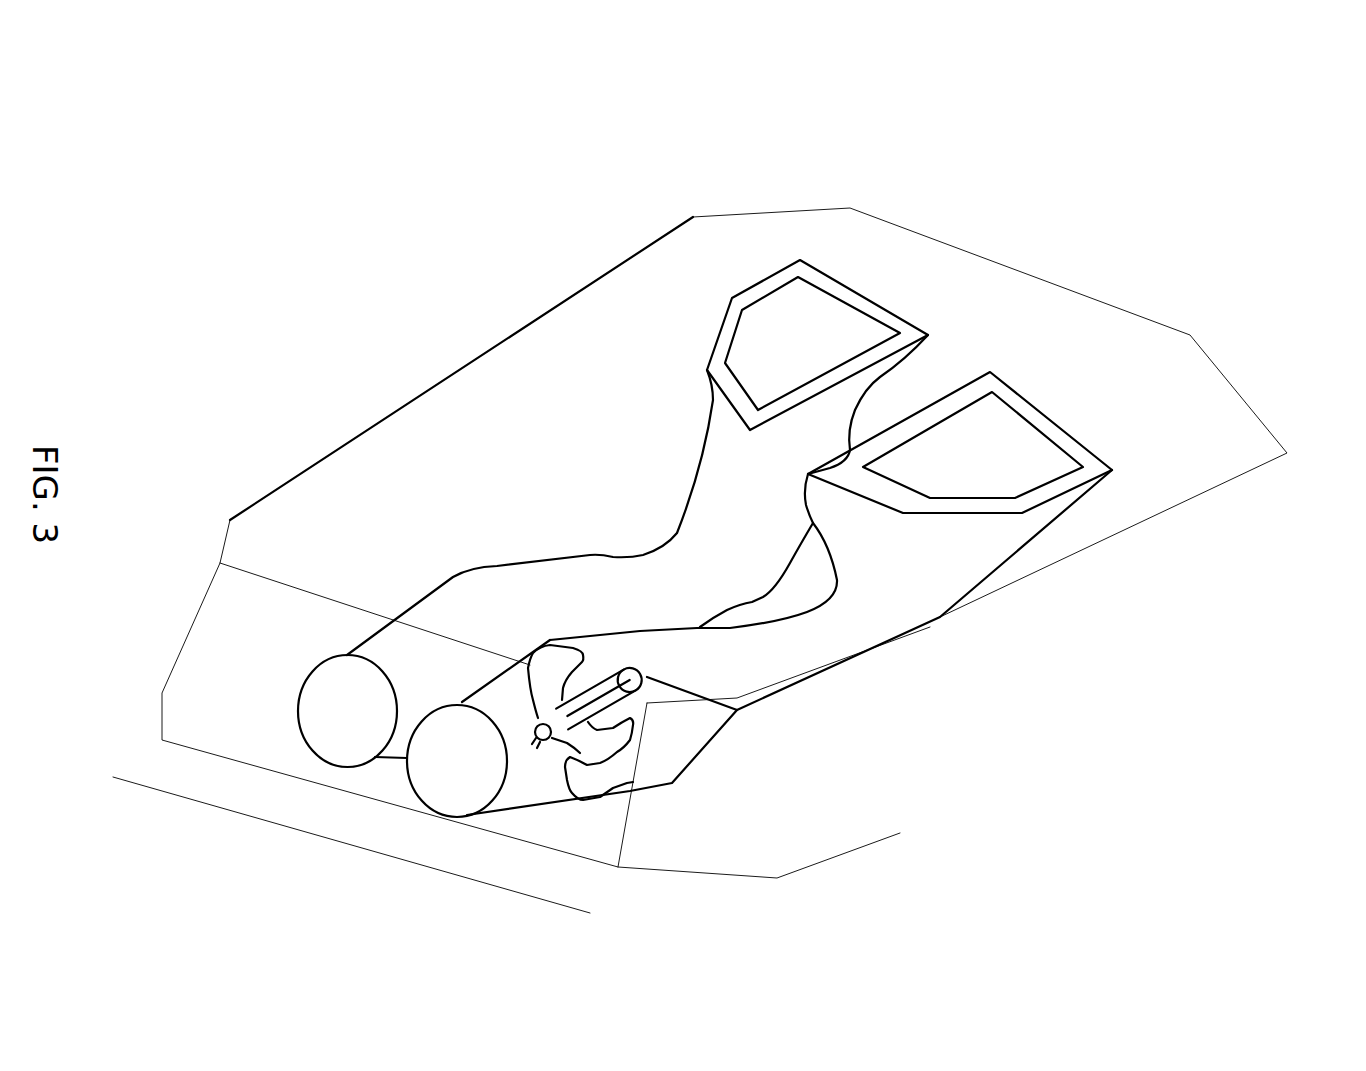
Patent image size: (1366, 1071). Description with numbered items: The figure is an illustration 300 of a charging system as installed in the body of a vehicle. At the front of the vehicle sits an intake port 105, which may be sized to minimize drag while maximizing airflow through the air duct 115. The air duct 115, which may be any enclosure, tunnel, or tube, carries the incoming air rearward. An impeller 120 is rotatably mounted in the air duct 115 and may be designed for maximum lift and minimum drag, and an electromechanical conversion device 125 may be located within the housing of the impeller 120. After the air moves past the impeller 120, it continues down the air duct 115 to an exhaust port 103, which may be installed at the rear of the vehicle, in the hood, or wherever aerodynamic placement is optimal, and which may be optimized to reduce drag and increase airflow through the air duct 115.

The illustration 300 is at (1268, 162).
The exhaust port 103 is at (1010, 470).
The intake port 105 is at (340, 660).
The air duct 115 is at (663, 546).
The impeller 120 is at (612, 785).
The electromechanical conversion device 125 is at (735, 705).